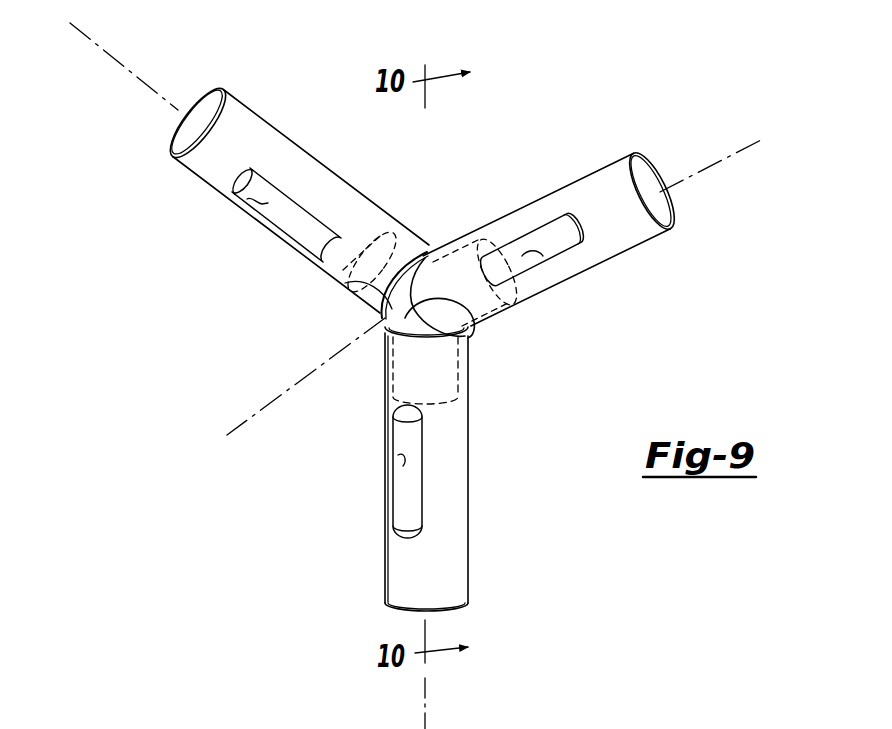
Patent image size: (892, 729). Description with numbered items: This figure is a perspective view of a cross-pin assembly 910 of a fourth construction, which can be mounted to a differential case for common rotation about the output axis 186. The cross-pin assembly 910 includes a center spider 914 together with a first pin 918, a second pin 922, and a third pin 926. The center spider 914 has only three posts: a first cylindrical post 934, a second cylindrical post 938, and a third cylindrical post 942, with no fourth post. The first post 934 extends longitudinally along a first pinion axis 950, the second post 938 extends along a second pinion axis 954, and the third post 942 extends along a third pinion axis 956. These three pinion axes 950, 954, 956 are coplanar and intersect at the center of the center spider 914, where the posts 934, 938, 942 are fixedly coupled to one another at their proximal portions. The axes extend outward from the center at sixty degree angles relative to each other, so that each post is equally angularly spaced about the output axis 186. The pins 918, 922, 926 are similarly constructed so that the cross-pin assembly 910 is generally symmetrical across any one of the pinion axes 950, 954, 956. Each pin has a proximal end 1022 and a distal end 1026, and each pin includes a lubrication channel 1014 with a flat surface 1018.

The cross-pin assembly 910 is at (514, 126).
The center spider 914 is at (390, 313).
The first pin 918 is at (245, 107).
The second pin 922 is at (648, 240).
The third pin 926 is at (383, 567).
The first cylindrical post 934 is at (388, 230).
The second cylindrical post 938 is at (458, 250).
The third cylindrical post 942 is at (440, 400).
The first pinion axis 950 is at (92, 43).
The second pinion axis 954 is at (743, 150).
The third pinion axis 956 is at (425, 696).
The output axis 186 is at (240, 426).
The lubrication channel 1014 is at (302, 228).
The flat surface 1018 is at (252, 205).
The proximal end 1022 is at (397, 307).
The distal end 1026 is at (196, 100).